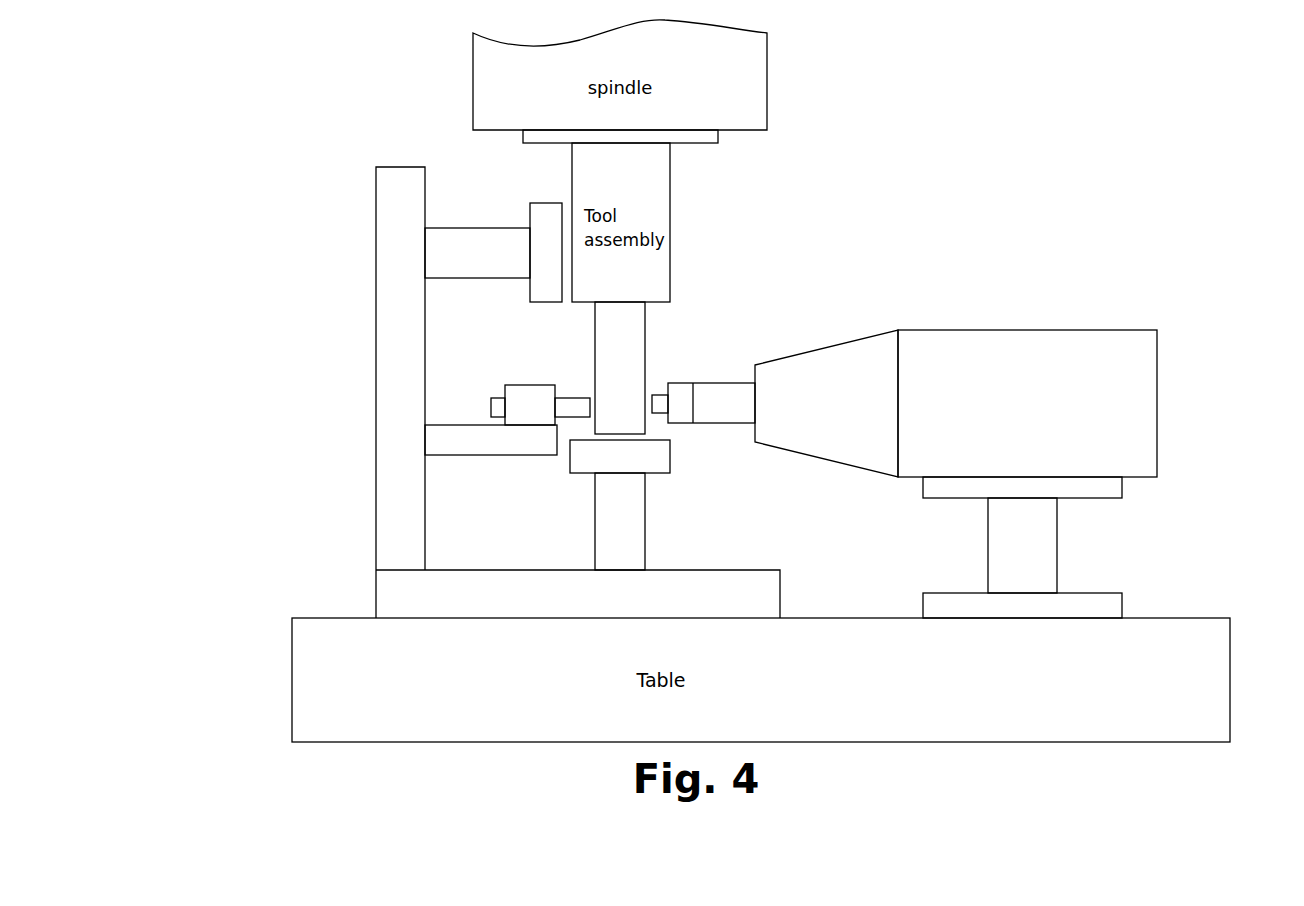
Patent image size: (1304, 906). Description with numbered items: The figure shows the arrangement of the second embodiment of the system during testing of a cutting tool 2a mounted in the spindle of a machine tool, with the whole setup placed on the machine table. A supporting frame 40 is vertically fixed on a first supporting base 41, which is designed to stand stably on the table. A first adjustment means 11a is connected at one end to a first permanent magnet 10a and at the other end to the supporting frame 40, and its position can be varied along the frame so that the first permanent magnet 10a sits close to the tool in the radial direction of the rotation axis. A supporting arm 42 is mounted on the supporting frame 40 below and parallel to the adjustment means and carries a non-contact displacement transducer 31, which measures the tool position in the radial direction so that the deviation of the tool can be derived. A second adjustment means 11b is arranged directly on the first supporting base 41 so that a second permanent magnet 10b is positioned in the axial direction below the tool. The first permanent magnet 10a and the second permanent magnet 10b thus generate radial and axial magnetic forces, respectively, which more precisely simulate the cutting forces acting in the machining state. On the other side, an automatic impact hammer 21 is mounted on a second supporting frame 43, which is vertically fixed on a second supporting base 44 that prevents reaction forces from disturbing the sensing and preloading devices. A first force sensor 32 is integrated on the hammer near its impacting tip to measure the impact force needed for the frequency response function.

The first permanent magnet 10a is at (522, 215).
The first adjustment means 11a is at (443, 268).
The non-contact displacement transducer 31 is at (570, 390).
The supporting frame 40 is at (378, 325).
The supporting arm 42 is at (455, 422).
The second permanent magnet 10b is at (562, 465).
The first supporting base 41 is at (523, 568).
The second adjustment means 11b is at (587, 522).
The cutting tool 2a is at (657, 337).
The first force sensor 32 is at (725, 378).
The automatic impact hammer 21 is at (982, 325).
The second supporting frame 43 is at (1065, 550).
The second supporting base 44 is at (1112, 593).